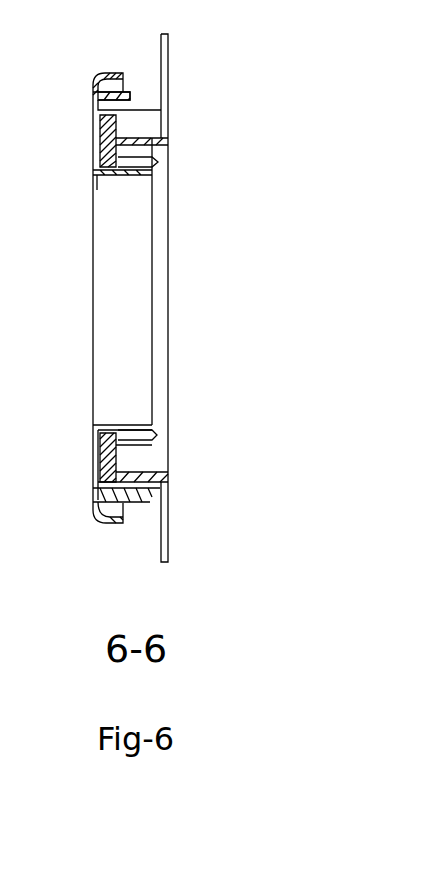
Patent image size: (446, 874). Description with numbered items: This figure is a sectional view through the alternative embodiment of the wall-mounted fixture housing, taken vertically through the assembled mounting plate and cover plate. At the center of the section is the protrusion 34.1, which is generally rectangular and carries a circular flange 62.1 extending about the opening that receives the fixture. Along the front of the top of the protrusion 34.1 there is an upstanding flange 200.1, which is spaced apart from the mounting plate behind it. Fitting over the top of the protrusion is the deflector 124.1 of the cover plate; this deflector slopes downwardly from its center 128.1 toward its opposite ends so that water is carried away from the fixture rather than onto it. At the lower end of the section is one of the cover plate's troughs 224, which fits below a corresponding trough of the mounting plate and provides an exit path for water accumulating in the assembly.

The center of deflector 128.1 is at (112, 90).
The upstanding flange 200.1 is at (102, 102).
The circular flange 62.1 is at (108, 428).
The deflector 124.1 is at (140, 423).
The protrusion 34.1 is at (118, 467).
The trough 224 is at (150, 502).